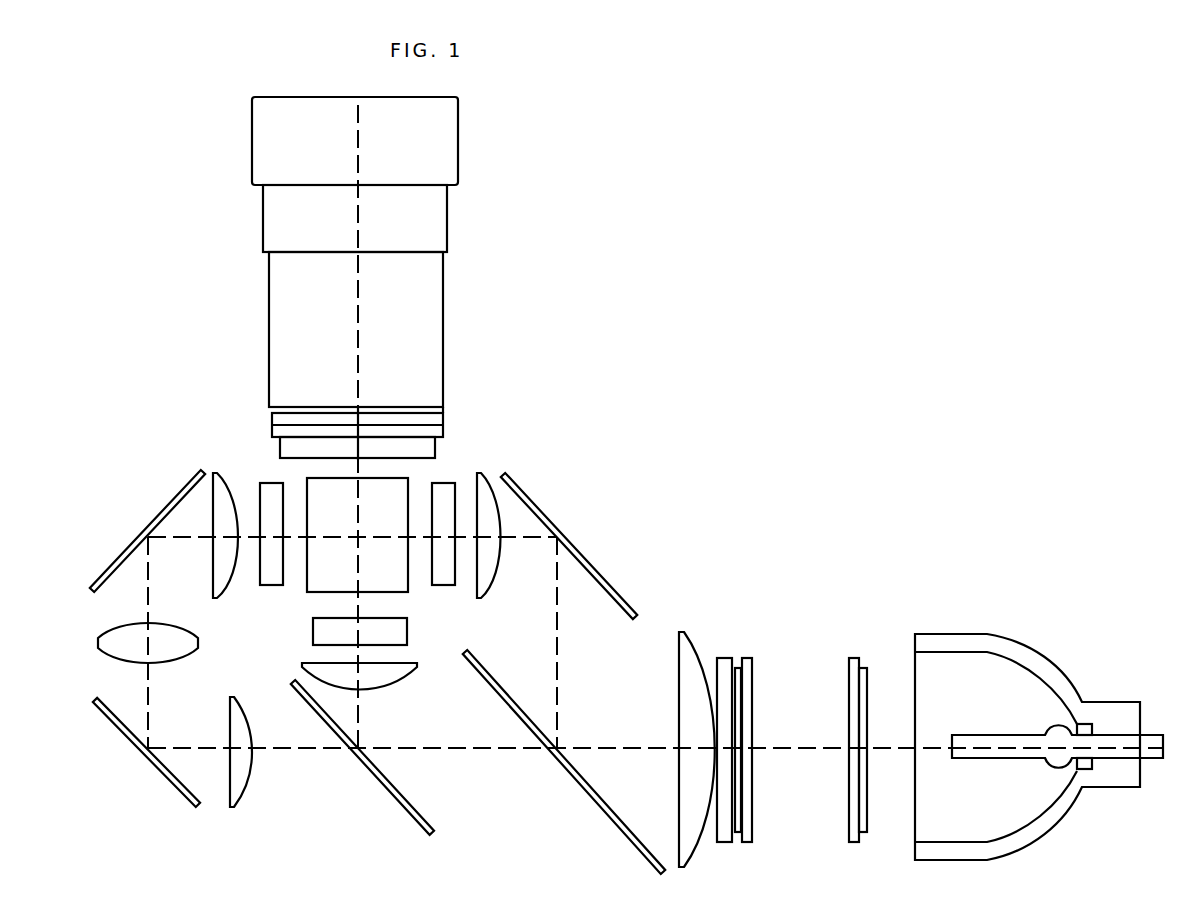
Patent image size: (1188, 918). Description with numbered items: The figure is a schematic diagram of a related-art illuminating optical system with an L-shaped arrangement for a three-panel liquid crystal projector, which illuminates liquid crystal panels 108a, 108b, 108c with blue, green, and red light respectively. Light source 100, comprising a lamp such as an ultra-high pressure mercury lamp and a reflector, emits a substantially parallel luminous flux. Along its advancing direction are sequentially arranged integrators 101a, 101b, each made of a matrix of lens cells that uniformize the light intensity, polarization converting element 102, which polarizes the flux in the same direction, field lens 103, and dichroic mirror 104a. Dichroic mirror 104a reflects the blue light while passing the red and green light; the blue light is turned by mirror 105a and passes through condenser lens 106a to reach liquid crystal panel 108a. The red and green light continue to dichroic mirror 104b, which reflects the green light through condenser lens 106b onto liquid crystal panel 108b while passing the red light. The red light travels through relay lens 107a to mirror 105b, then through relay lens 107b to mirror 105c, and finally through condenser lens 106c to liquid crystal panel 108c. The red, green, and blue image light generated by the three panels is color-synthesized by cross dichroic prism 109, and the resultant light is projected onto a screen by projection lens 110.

The light source 100 is at (1047, 667).
The integrator 101a is at (853, 658).
The integrator 101b is at (747, 658).
The polarization converting element 102 is at (725, 658).
The field lens 103 is at (684, 632).
The dichroic mirror 104a is at (620, 823).
The dichroic mirror 104b is at (428, 834).
The mirror 105a is at (545, 505).
The mirror 105b is at (170, 779).
The mirror 105c is at (141, 529).
The condenser lens 106a is at (483, 470).
The condenser lens 106b is at (383, 688).
The condenser lens 106c is at (213, 470).
The relay lens 107a is at (240, 807).
The relay lens 107b is at (98, 645).
The liquid crystal panel 108a is at (453, 482).
The liquid crystal panel 108b is at (407, 632).
The liquid crystal panel 108c is at (266, 482).
The cross dichroic prism 109 is at (395, 592).
The projection lens 110 is at (443, 291).